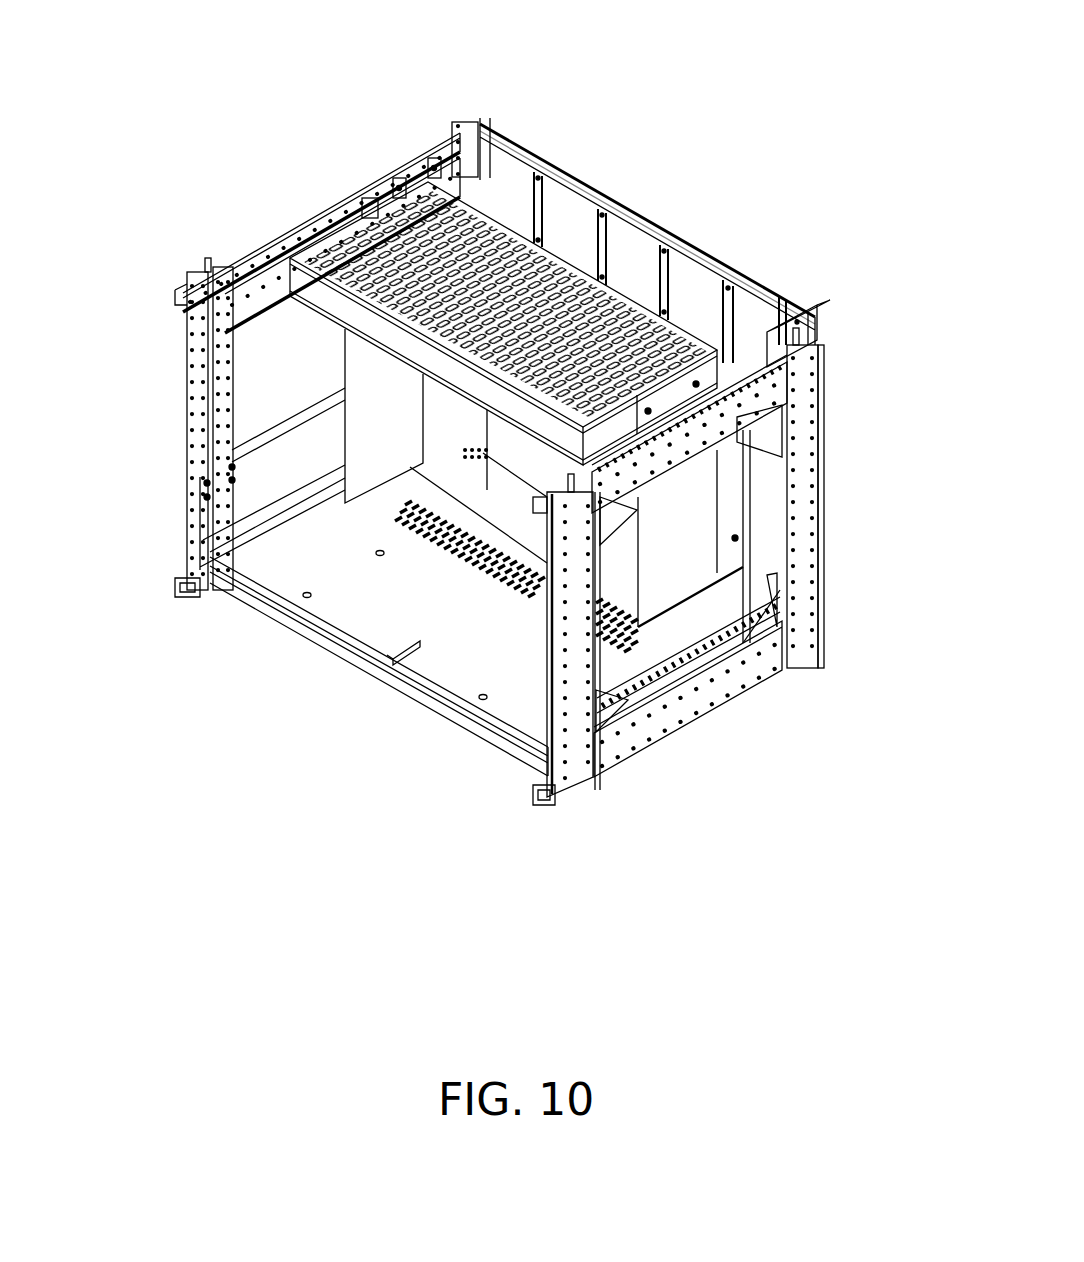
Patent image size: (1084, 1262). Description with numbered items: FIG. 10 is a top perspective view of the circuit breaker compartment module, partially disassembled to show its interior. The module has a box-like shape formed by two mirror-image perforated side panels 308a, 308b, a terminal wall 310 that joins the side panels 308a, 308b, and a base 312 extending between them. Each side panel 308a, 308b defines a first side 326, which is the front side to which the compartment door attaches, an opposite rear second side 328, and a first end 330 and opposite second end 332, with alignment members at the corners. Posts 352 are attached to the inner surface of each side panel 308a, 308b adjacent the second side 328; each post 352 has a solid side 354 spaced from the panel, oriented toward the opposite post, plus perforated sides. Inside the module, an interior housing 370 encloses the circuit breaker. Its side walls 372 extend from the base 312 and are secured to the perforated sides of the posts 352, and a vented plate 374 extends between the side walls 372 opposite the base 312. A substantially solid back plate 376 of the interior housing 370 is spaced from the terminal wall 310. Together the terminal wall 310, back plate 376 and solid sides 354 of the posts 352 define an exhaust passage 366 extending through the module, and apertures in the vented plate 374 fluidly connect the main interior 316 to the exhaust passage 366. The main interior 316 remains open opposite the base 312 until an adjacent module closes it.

The side panel 308a is at (291, 213).
The side panel 308b is at (832, 375).
The terminal wall 310 is at (702, 247).
The base 312 is at (333, 648).
The main interior 316 is at (442, 600).
The first side 326 is at (168, 500).
The second side 328 is at (478, 96).
The first end 330 is at (250, 236).
The second end 332 is at (212, 596).
The post 352 is at (767, 332).
The solid side 354 is at (470, 185).
The exhaust passage 366 is at (629, 270).
The interior housing 370 is at (672, 366).
The side wall 372 is at (367, 383).
The vented plate 374 is at (400, 207).
The back plate 376 is at (513, 443).